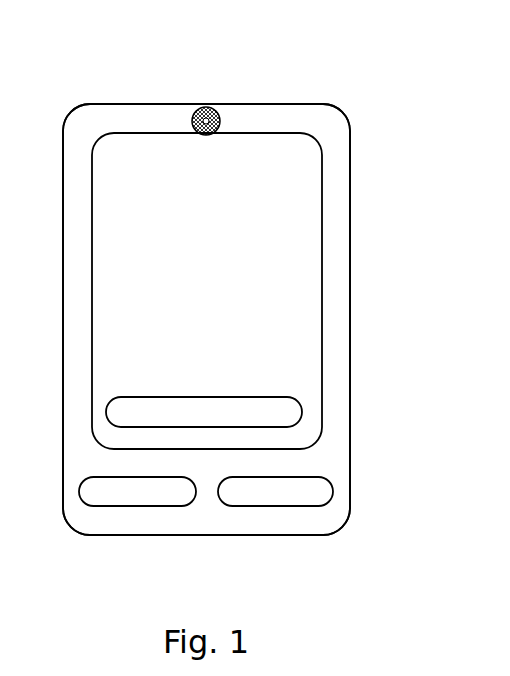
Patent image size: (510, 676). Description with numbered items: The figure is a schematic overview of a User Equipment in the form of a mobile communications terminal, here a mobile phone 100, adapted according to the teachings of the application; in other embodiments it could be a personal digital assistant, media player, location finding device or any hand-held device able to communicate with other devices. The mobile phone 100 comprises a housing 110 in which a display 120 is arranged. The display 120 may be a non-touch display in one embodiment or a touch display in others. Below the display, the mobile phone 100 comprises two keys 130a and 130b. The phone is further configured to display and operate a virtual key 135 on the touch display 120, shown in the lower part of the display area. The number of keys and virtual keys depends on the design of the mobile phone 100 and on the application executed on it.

The mobile phone 100 is at (90, 101).
The housing 110 is at (350, 218).
The display 120 is at (322, 292).
The virtual key 135 is at (302, 413).
The key 130a is at (138, 506).
The key 130b is at (333, 493).